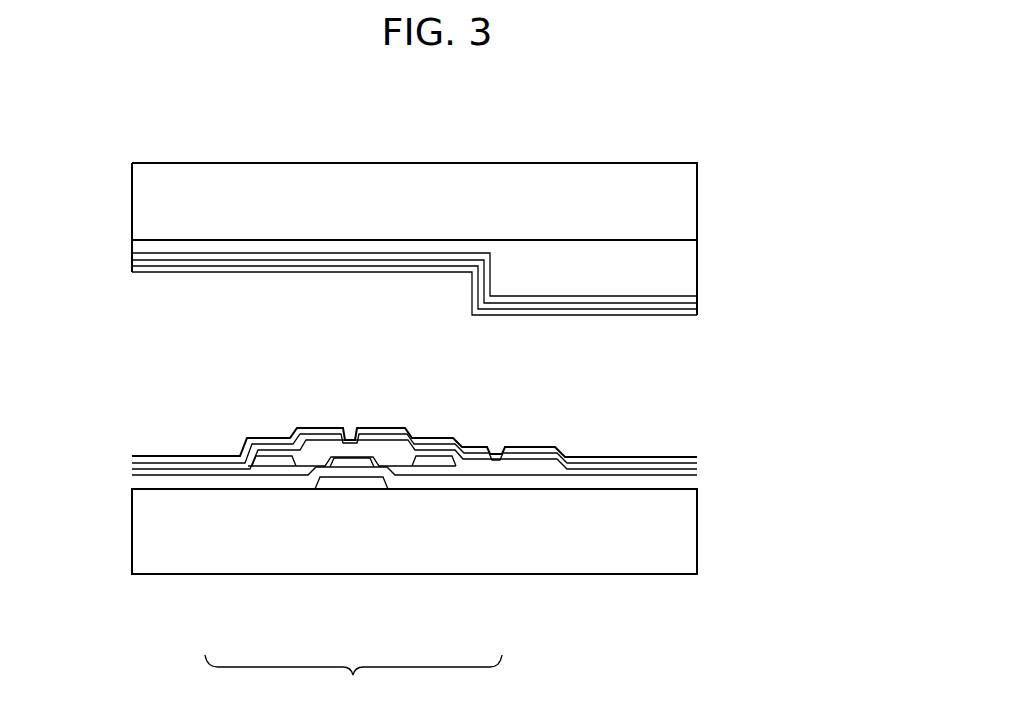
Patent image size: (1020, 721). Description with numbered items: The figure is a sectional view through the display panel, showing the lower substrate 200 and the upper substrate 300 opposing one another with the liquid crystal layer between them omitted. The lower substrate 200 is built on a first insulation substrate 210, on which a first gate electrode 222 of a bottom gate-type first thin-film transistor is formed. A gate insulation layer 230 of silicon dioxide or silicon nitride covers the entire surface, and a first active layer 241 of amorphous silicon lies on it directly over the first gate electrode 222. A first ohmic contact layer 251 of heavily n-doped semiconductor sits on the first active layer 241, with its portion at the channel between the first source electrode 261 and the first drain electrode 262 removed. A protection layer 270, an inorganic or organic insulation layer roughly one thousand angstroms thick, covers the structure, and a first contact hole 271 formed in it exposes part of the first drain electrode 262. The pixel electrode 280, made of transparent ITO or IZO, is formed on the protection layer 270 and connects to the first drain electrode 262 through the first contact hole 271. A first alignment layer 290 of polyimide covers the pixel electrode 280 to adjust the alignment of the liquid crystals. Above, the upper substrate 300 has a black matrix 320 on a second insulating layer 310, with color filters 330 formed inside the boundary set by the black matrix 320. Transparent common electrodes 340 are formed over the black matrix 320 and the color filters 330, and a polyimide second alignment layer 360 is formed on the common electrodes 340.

The lower substrate 200 is at (467, 537).
The first insulation substrate 210 is at (688, 556).
The first gate electrode 222 is at (360, 480).
The gate insulation layer 230 is at (697, 483).
The first active layer 241 is at (295, 472).
The first ohmic contact layer 251 is at (413, 465).
The first source electrode 261 is at (276, 455).
The first drain electrode 262 is at (432, 458).
The protection layer 270 is at (697, 470).
The first contact hole 271 is at (493, 441).
The pixel electrode 280 is at (697, 463).
The first alignment layer 290 is at (697, 457).
The upper substrate 300 is at (423, 219).
The second insulating layer 310 is at (688, 183).
The black matrix 320 is at (140, 246).
The color filter 330 is at (688, 291).
The common electrode 340 is at (697, 303).
The second alignment layer 360 is at (697, 316).